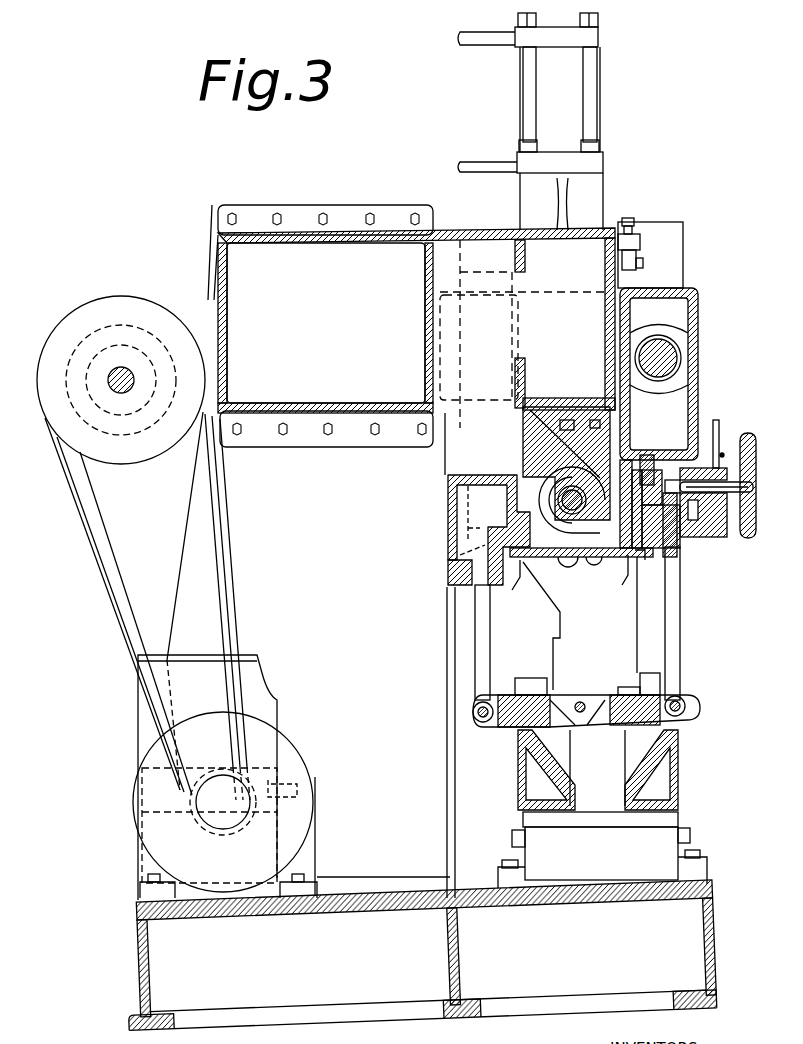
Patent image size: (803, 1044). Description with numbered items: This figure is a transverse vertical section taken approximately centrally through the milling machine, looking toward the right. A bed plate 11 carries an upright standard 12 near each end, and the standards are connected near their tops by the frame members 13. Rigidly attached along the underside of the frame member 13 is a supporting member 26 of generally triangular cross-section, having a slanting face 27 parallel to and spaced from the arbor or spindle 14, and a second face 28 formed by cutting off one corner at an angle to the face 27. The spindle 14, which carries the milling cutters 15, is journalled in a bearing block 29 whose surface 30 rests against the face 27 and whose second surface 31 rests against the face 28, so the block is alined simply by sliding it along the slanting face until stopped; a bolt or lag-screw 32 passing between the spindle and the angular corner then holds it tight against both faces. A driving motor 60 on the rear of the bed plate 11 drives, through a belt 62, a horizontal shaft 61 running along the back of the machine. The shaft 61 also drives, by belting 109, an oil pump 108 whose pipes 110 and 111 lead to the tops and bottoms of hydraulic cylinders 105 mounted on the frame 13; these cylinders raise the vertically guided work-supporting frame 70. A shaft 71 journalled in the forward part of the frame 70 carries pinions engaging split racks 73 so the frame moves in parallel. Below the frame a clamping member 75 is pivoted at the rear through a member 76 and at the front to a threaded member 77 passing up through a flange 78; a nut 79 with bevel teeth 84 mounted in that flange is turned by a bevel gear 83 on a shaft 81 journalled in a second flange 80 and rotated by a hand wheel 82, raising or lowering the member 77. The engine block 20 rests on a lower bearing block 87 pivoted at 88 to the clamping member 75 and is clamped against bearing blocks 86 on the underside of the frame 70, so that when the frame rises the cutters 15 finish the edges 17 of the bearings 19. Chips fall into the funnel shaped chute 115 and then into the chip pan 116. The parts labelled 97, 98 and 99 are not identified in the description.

The bed plate 11 is at (137, 936).
The upright standard 12 is at (447, 810).
The frame member 13 is at (375, 238).
The arbor or spindle 14 is at (549, 490).
The milling cutter 15 is at (563, 522).
The edge 17 is at (584, 560).
The bearing 19 is at (575, 557).
The engine block 20 is at (584, 620).
The supporting member 26 is at (530, 447).
The slanting face 27 is at (525, 430).
The face 28 is at (627, 462).
The bearing block 29 is at (553, 472).
The surface 30 is at (558, 490).
The second surface 31 is at (641, 470).
The bolt or lag-screw 32 is at (592, 546).
The driving motor 60 is at (313, 786).
The shaft 61 is at (133, 370).
The belt 62 is at (105, 578).
The work-supporting frame 70 is at (447, 510).
The shaft 71 is at (677, 353).
The split rack 73 is at (637, 278).
The clamping member 75 is at (511, 722).
The member 76 is at (491, 641).
The member 77 is at (681, 606).
The flange 78 is at (706, 538).
The nut 79 is at (668, 557).
The second flange 80 is at (716, 420).
The shaft 81 is at (740, 486).
The hand wheel 82 is at (757, 444).
The bevel gear 83 is at (680, 474).
The bevel teeth 84 is at (680, 487).
The bearing block 86 is at (570, 581).
The lower bearing block 87 is at (585, 690).
The pivot 88 is at (627, 758).
The spring 97 is at (717, 543).
The lever 98 is at (719, 428).
The pivot 99 is at (723, 453).
The hydraulic cylinder 105 is at (601, 82).
The oil pump 108 is at (265, 680).
The belting 109 is at (136, 545).
The pipe 110 is at (475, 42).
The pipe 111 is at (478, 160).
The funnel shaped chute 115 is at (567, 766).
The chip pan 116 is at (558, 850).